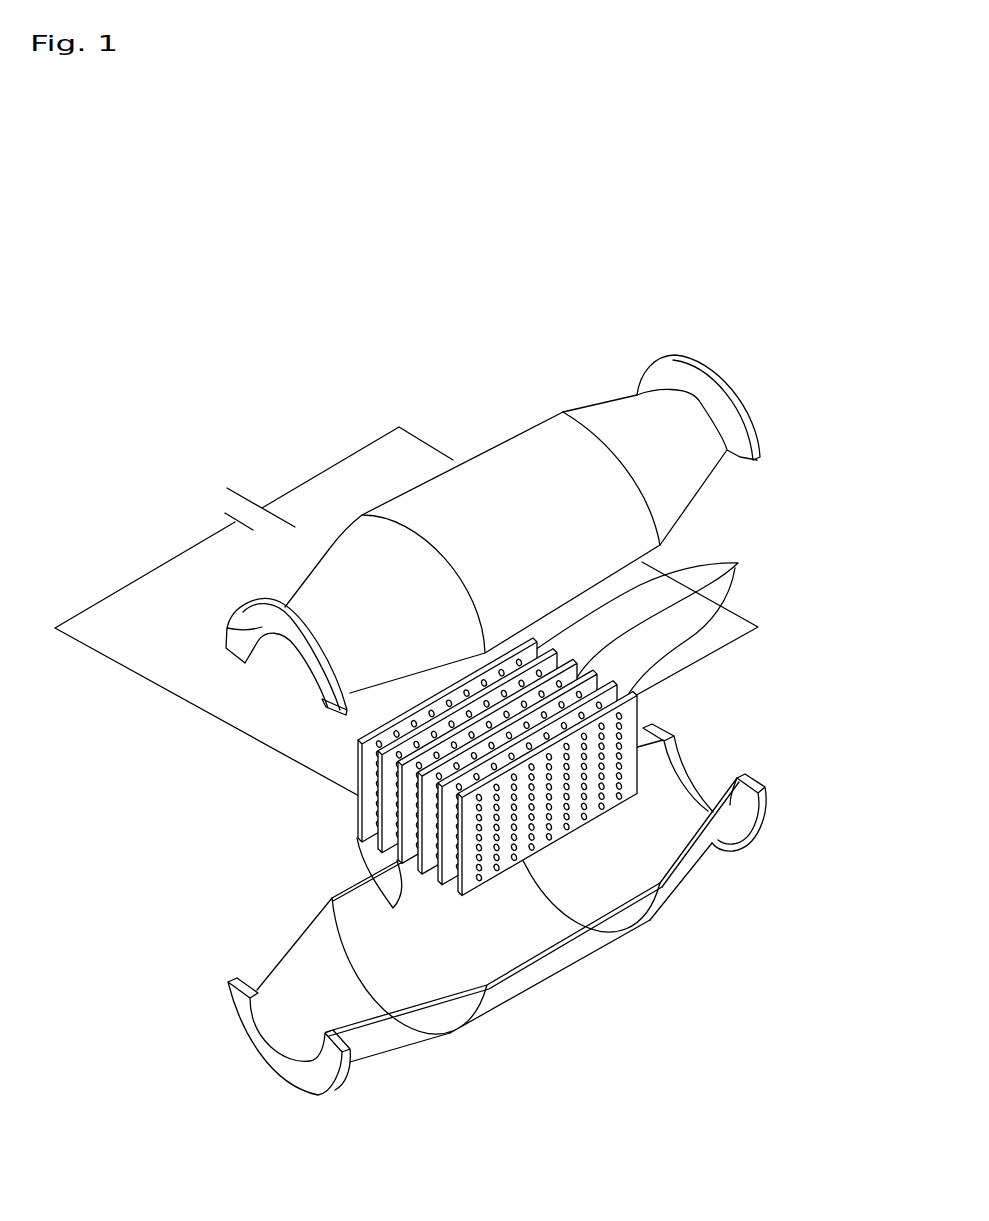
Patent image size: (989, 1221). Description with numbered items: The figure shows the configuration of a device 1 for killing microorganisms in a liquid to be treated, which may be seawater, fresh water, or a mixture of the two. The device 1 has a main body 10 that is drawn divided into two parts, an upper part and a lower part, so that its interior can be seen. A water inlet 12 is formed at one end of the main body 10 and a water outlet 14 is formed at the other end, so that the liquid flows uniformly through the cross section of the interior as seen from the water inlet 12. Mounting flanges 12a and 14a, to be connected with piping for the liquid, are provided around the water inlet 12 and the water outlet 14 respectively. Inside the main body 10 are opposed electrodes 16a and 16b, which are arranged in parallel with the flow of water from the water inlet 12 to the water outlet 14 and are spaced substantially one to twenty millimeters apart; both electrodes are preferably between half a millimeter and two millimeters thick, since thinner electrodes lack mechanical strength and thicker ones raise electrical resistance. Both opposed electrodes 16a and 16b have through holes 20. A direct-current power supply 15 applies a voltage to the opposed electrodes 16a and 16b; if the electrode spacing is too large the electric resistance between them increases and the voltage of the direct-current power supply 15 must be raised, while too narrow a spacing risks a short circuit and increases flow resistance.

The device for killing microorganisms 1 is at (250, 267).
The main body 10 is at (532, 436).
The water inlet 12 is at (282, 1037).
The mounting flange 12a is at (232, 630).
The water outlet 14 is at (713, 754).
The mounting flange 14a is at (719, 388).
The direct-current power supply 15 is at (250, 493).
The opposed electrode 16a is at (745, 554).
The opposed electrode 16b is at (380, 891).
The through holes 20 is at (587, 804).